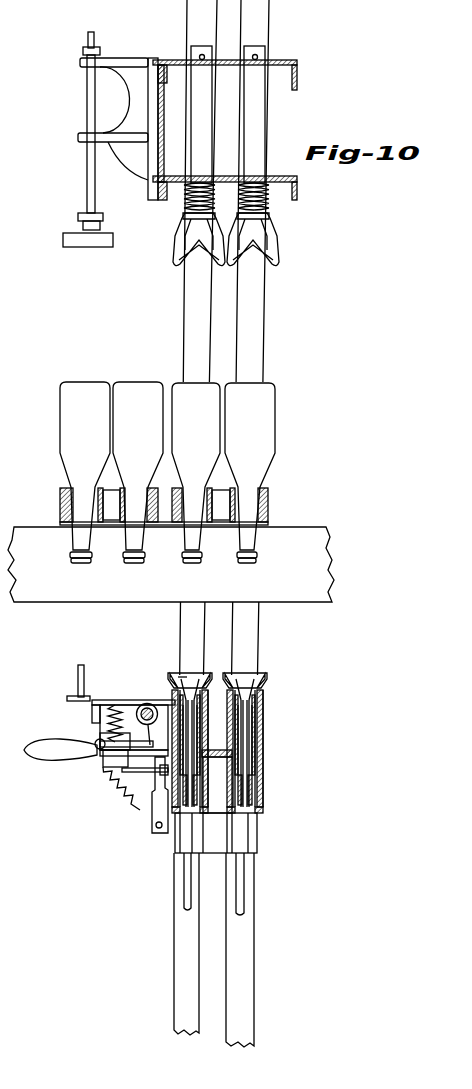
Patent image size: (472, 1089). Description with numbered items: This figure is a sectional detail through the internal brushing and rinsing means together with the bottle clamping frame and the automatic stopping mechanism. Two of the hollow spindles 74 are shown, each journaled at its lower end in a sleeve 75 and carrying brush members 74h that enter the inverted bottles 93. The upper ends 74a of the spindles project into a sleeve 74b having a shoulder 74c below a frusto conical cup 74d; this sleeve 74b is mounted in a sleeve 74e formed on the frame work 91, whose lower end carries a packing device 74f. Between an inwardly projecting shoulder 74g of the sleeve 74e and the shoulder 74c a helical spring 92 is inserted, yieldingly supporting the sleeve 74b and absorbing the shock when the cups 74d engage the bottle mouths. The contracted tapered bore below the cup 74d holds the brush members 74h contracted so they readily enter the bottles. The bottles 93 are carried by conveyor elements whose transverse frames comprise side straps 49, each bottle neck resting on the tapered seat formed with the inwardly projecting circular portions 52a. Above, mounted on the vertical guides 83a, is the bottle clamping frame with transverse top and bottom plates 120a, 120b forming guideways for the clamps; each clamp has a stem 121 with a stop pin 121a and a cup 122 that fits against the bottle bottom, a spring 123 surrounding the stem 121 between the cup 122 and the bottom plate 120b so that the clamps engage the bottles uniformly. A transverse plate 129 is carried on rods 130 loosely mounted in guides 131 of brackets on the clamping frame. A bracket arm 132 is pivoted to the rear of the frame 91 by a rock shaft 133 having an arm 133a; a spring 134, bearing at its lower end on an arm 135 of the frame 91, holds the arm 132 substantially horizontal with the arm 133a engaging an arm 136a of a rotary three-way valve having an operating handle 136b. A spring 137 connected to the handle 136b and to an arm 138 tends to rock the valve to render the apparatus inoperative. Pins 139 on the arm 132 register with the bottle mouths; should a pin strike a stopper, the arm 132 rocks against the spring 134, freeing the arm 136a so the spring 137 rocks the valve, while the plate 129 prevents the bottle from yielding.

The vertical guides 83a is at (258, 322).
The top plate 120a is at (232, 62).
The bottom plate 120b is at (222, 175).
The stem 121 is at (260, 117).
The stop pin 121a is at (260, 55).
The spring 123 is at (268, 213).
The cup 122 is at (277, 255).
The rods 130 is at (88, 108).
The guides 131 is at (80, 62).
The plate 129 is at (85, 240).
The bottles 93 is at (284, 428).
The side straps 49 is at (270, 507).
The inwardly projecting circular portions 52a is at (272, 545).
The hollow spindles 74 is at (240, 792).
The upper ends of the spindles 74a is at (260, 705).
The sleeve 74b is at (260, 763).
The shoulder 74c is at (257, 697).
The frusto conical cup 74d is at (257, 680).
The sleeve 74e is at (262, 730).
The packing device 74f is at (258, 818).
The inwardly projecting shoulder 74g is at (222, 664).
The brush members 74h is at (187, 677).
The helical spring 92 is at (262, 747).
The frame work 91 is at (217, 750).
The sleeve 75 is at (185, 950).
The pins 139 is at (78, 672).
The bracket arm 132 is at (115, 698).
The rock shaft 133 is at (147, 704).
The arm 133a is at (148, 727).
The spring 134 is at (110, 710).
The arm 135 is at (107, 758).
The arm 136a is at (113, 776).
The operating handle 136b is at (43, 747).
The spring 137 is at (135, 789).
The arm 138 is at (160, 832).